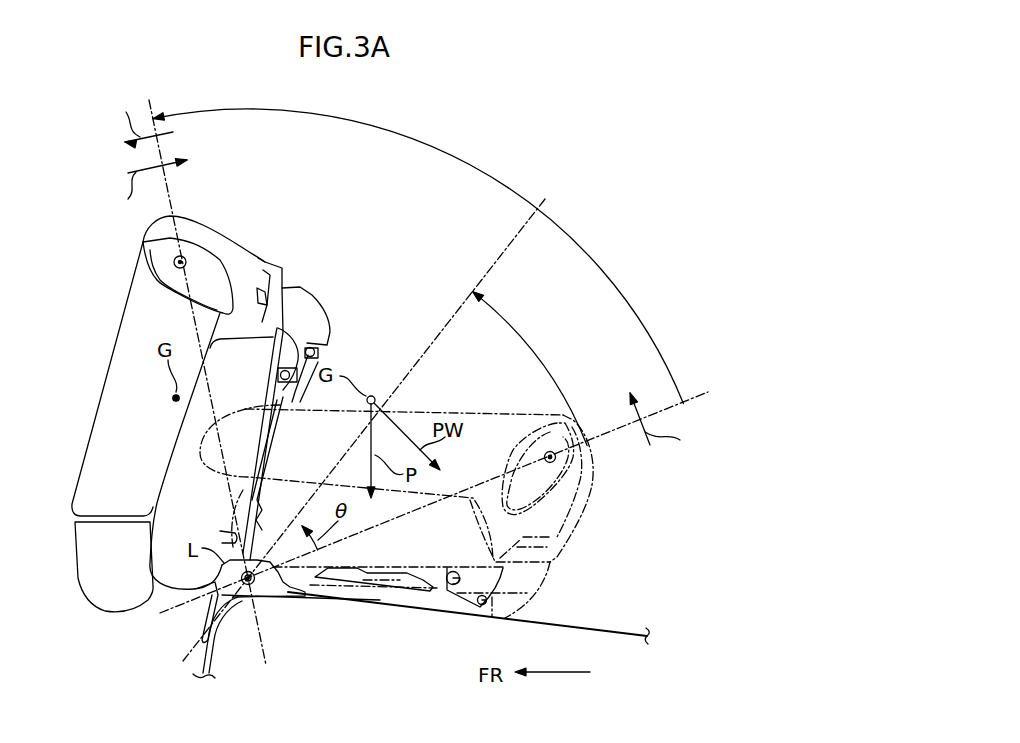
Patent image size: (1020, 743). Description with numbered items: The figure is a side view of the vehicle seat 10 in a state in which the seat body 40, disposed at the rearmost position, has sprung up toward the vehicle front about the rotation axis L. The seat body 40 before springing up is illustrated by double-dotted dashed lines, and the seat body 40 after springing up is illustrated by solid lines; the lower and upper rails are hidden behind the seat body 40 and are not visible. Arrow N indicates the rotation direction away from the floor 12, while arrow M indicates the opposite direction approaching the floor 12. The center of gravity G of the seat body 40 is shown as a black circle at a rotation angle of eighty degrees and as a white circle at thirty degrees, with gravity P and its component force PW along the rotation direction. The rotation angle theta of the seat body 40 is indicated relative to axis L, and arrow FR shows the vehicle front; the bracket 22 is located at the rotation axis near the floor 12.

The vehicle seat 10 is at (597, 185).
The floor 12 is at (640, 634).
The bracket 22 is at (278, 585).
The seat body 40 is at (100, 378).